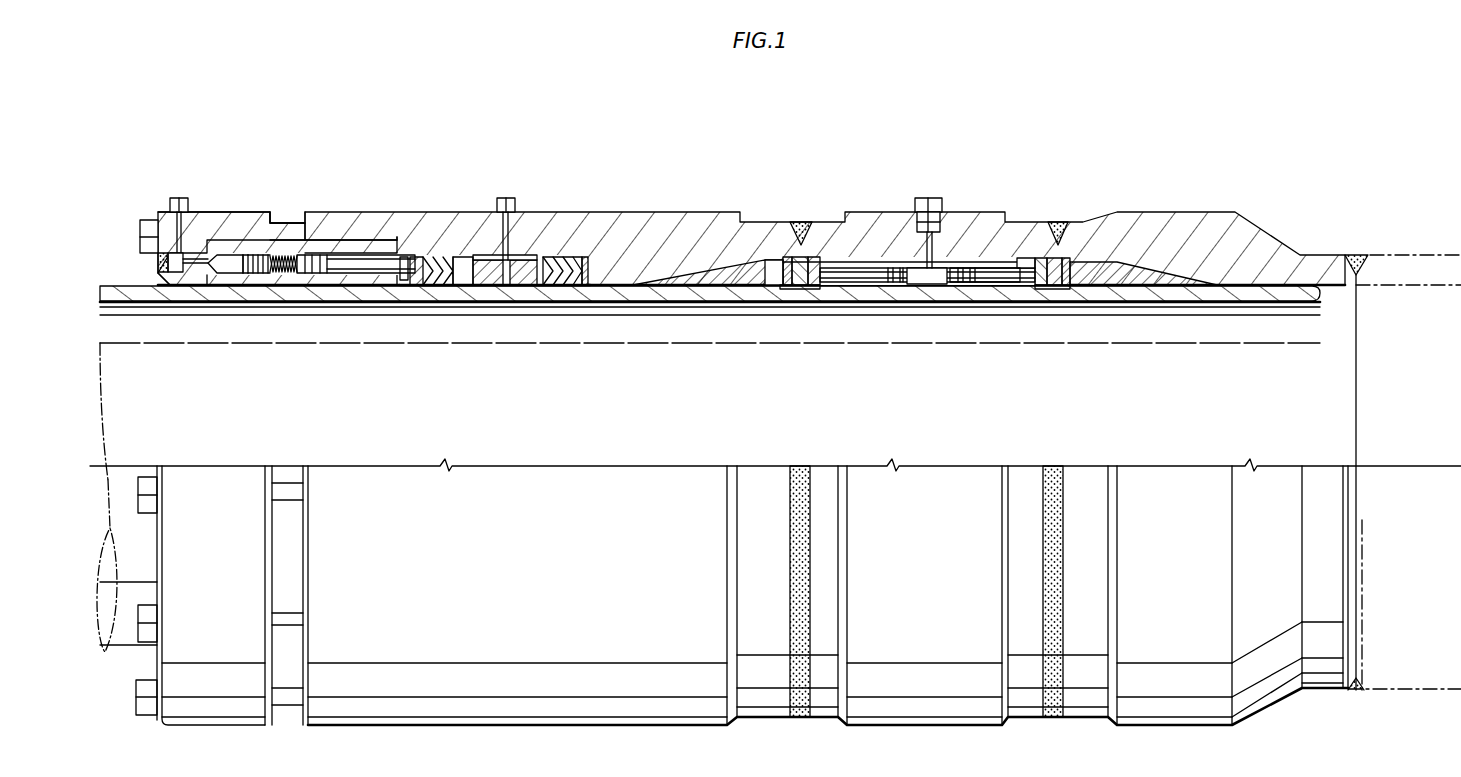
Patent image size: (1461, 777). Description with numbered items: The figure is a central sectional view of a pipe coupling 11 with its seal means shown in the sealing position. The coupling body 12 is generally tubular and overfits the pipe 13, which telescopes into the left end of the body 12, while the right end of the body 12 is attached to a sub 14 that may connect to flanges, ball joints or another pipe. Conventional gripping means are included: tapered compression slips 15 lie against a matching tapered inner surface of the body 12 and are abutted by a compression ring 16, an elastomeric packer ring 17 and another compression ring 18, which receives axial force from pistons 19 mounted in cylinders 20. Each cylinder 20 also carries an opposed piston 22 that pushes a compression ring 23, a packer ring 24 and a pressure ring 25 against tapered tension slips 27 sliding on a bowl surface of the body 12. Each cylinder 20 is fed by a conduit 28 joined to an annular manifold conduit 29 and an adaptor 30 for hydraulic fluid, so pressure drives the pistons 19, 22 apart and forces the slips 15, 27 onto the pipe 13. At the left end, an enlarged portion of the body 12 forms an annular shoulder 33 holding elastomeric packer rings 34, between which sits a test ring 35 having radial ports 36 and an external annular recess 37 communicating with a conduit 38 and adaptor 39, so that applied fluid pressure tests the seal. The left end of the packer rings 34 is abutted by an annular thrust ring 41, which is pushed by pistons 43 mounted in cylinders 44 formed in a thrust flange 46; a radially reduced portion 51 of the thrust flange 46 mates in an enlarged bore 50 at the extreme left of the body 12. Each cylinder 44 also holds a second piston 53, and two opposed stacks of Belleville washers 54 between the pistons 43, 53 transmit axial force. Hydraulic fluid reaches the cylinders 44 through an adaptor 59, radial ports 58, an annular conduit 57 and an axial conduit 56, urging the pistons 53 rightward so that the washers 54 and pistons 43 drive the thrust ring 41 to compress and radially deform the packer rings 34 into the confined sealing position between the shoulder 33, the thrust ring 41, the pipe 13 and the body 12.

The coupling 11 is at (624, 211).
The coupling body 12 is at (677, 240).
The pipe 13 is at (1283, 290).
The sub 14 is at (1422, 258).
The compression slips 15 is at (724, 284).
The compression ring 16 is at (787, 284).
The packer ring 17 is at (801, 284).
The compression ring 18 is at (812, 284).
The pistons 19 is at (877, 282).
The cylinders 20 is at (985, 257).
The piston 22 is at (992, 282).
The compression ring 23 is at (1038, 284).
The packer ring 24 is at (1053, 284).
The pressure ring 25 is at (1067, 284).
The tension slips 27 is at (1140, 284).
The conduit 28 is at (908, 240).
The annular manifold conduit 29 is at (950, 225).
The adaptor 30 is at (926, 198).
The annular shoulder 33 is at (577, 284).
The packer rings 34 is at (443, 284).
The test ring 35 is at (486, 284).
The radial ports 36 is at (523, 268).
The annular recess 37 is at (488, 257).
The conduit 38 is at (504, 257).
The adaptor 39 is at (505, 198).
The annular thrust ring 41 is at (408, 284).
The pistons 43 is at (353, 288).
The cylinder 44 is at (233, 292).
The thrust flange 46 is at (242, 211).
The enlarged bore 50 is at (385, 238).
The radially reduced portion 51 is at (340, 238).
The piston 53 is at (257, 292).
The Belleville washers 54 is at (290, 292).
The conduit 56 is at (190, 292).
The annular conduit 57 is at (157, 265).
The radial ports 58 is at (186, 240).
The adaptor 59 is at (176, 199).